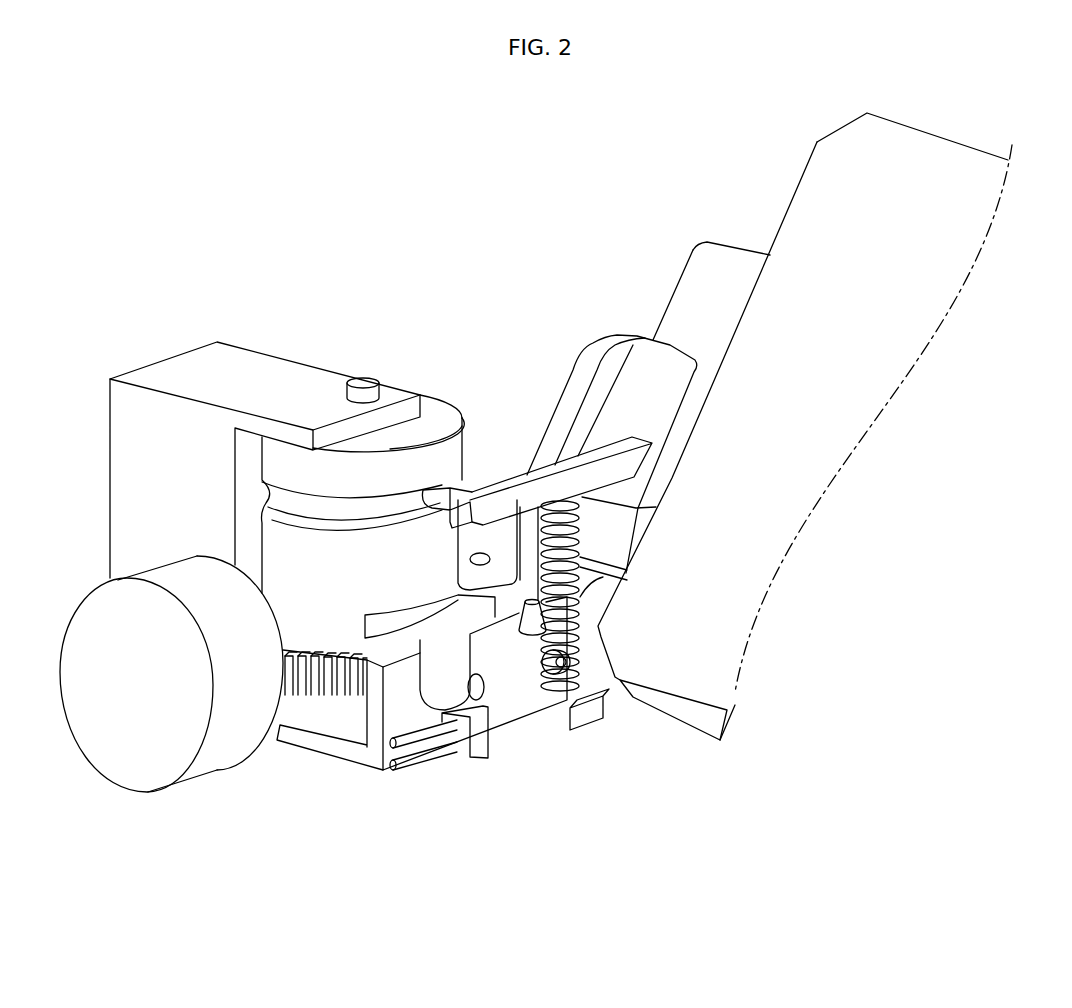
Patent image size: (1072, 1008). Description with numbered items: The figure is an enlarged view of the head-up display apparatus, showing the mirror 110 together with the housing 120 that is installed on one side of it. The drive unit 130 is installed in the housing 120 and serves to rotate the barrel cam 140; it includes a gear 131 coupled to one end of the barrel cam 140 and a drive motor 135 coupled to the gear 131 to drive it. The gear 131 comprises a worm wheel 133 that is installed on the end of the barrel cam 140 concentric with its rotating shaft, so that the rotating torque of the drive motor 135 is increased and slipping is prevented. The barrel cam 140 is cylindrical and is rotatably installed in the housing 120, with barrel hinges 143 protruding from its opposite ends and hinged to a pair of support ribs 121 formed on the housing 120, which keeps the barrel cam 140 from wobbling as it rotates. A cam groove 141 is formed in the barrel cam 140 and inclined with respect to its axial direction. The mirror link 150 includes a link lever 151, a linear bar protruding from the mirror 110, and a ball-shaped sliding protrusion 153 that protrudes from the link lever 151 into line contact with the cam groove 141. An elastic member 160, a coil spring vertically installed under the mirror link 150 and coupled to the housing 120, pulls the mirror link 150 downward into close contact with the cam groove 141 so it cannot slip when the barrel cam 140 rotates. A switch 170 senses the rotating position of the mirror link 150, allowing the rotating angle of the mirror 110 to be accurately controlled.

The mirror 110 is at (797, 148).
The housing 120 is at (265, 430).
The support ribs 121 is at (265, 460).
The barrel hinges 143 is at (363, 381).
The mirror link 150 is at (537, 408).
The link lever 151 is at (510, 480).
The sliding protrusion 153 is at (438, 490).
The cam groove 141 is at (397, 628).
The barrel cam 140 is at (429, 582).
The switch 170 is at (532, 632).
The elastic member 160 is at (598, 720).
The drive unit 130 is at (236, 722).
The drive motor 135 is at (213, 768).
The gear 131 is at (314, 710).
The worm wheel 133 is at (345, 768).